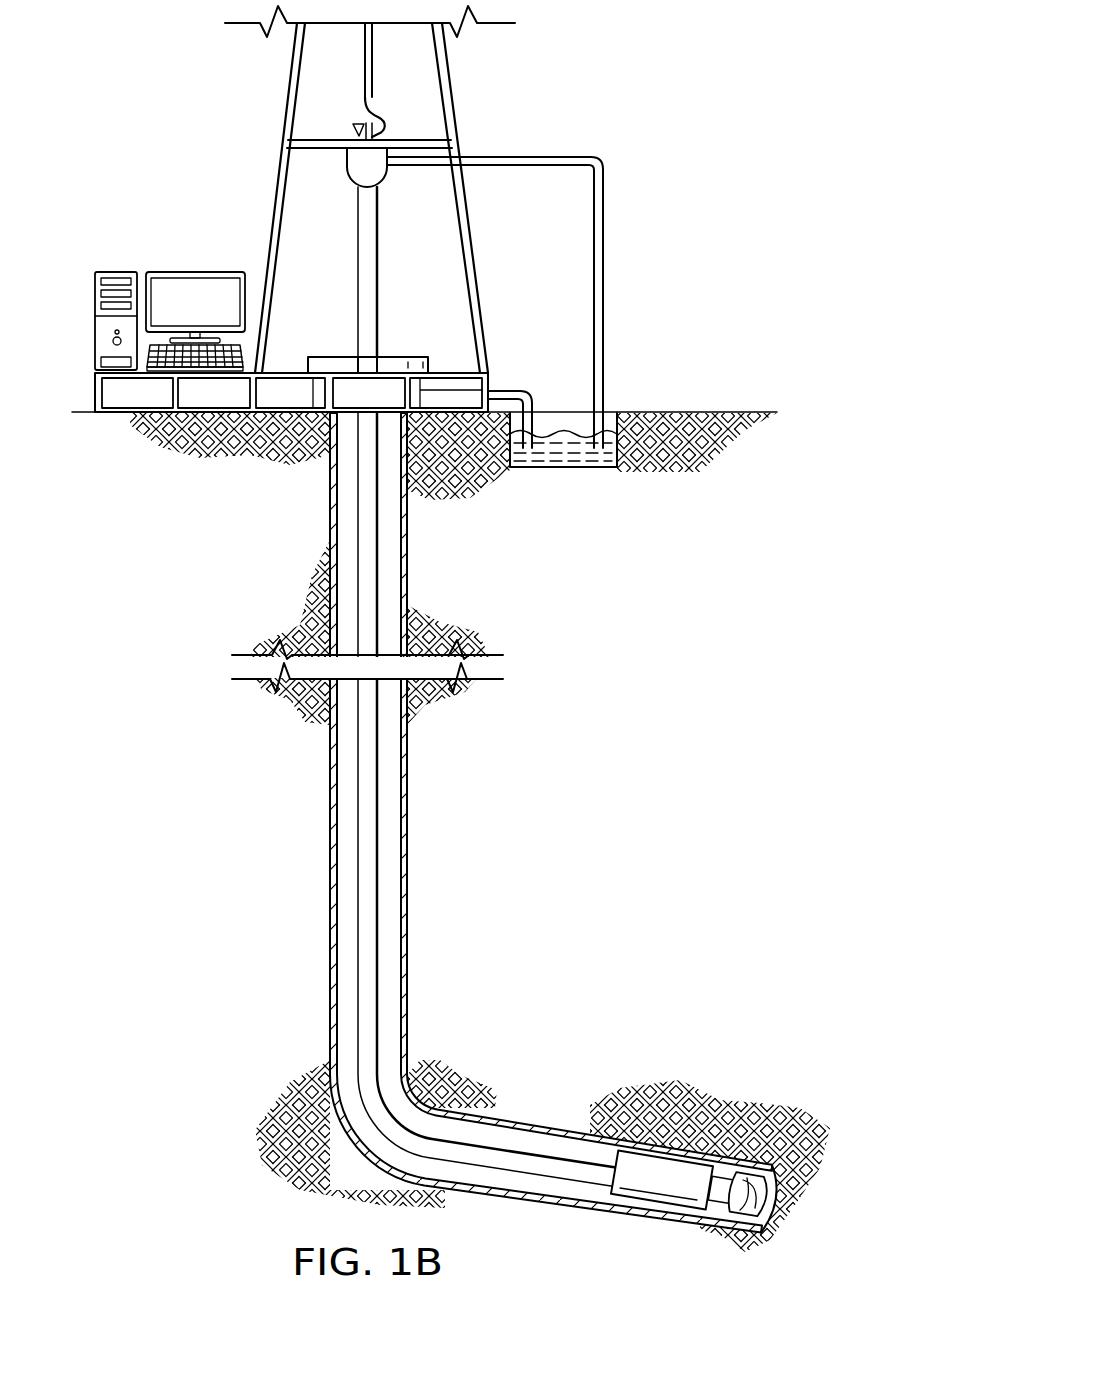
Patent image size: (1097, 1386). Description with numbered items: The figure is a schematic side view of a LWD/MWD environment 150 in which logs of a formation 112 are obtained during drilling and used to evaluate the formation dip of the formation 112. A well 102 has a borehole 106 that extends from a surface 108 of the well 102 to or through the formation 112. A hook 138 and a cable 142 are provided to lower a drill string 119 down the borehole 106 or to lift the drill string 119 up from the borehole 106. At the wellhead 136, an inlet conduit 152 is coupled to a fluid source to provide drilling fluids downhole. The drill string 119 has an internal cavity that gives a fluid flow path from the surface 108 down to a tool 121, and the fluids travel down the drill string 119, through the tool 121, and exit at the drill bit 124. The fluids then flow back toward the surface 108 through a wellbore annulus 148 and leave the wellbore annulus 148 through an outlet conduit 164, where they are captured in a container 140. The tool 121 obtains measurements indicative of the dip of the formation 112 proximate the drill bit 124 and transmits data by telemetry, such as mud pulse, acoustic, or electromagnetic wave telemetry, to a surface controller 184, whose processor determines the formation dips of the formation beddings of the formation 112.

The well 102 is at (396, 346).
The borehole 106 is at (405, 562).
The surface 108 is at (747, 412).
The formation 112 is at (571, 1078).
The drill string 119 is at (367, 930).
The tool 121 is at (658, 1200).
The drill bit 124 is at (745, 1220).
The wellhead 136 is at (330, 357).
The hook 138 is at (384, 123).
The container 140 is at (567, 458).
The cable 142 is at (363, 83).
The wellbore annulus 148 is at (347, 500).
The LWD/MWD environment 150 is at (206, 173).
The inlet conduit 152 is at (546, 157).
The outlet conduit 164 is at (505, 391).
The controller 184 is at (113, 272).